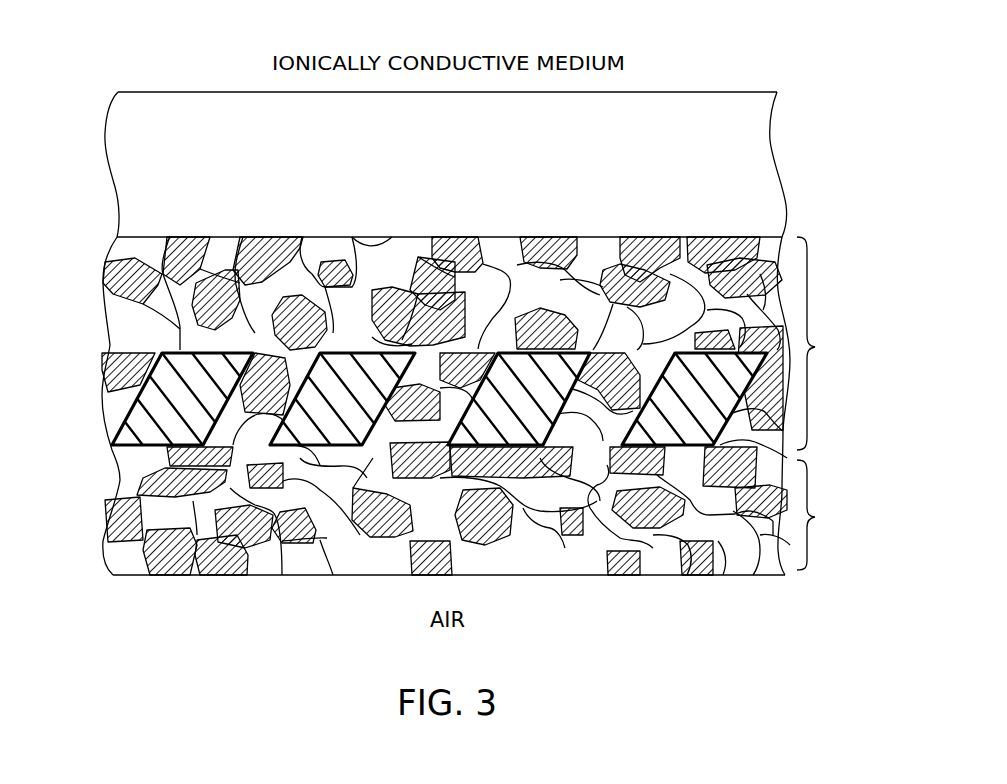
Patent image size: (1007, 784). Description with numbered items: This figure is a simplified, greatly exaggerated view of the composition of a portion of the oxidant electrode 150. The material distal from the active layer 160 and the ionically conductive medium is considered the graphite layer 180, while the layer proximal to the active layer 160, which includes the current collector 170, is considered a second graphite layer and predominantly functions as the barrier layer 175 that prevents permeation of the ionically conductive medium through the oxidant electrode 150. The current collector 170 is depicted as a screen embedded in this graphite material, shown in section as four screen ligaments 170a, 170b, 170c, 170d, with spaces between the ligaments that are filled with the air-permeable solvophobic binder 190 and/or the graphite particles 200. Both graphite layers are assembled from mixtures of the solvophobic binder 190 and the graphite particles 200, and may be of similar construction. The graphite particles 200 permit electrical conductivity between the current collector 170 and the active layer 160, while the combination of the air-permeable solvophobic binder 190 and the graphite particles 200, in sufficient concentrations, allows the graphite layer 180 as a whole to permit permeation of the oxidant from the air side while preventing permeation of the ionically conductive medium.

The oxidant electrode 150 is at (800, 90).
The active layer 160 is at (596, 141).
The current collector 170 is at (427, 330).
The screen ligament 170a is at (137, 418).
The screen ligament 170b is at (340, 360).
The screen ligament 170c is at (540, 360).
The screen ligament 170d is at (758, 240).
The barrier layer 175 is at (831, 343).
The graphite layer 180 is at (824, 515).
The air-permeable solvophobic binder 190 is at (378, 237).
The graphite particles 200 is at (698, 237).